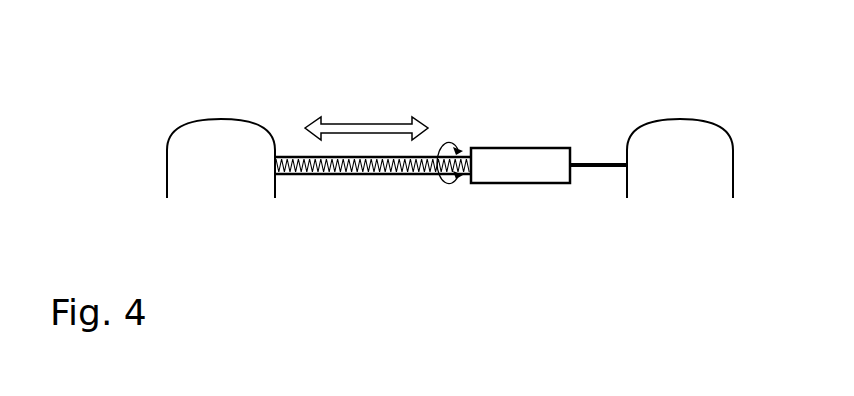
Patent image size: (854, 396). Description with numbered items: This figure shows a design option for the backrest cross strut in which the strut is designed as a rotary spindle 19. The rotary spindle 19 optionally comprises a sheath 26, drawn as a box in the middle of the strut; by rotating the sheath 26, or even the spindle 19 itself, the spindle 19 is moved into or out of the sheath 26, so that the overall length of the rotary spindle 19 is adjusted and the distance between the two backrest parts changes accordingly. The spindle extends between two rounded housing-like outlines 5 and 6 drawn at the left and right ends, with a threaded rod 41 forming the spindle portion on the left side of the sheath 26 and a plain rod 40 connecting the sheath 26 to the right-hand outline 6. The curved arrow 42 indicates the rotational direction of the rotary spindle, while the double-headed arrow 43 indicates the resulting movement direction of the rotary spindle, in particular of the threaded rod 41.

The rotary spindle 19 is at (489, 71).
The first housing part 5 is at (218, 127).
The second housing part 6 is at (697, 129).
The threaded rod 41 is at (335, 176).
The arrow indicating movement direction 43 is at (368, 125).
The arrow indicating rotational direction 42 is at (442, 186).
The sheath 26 is at (530, 160).
The connecting rod 40 is at (601, 163).